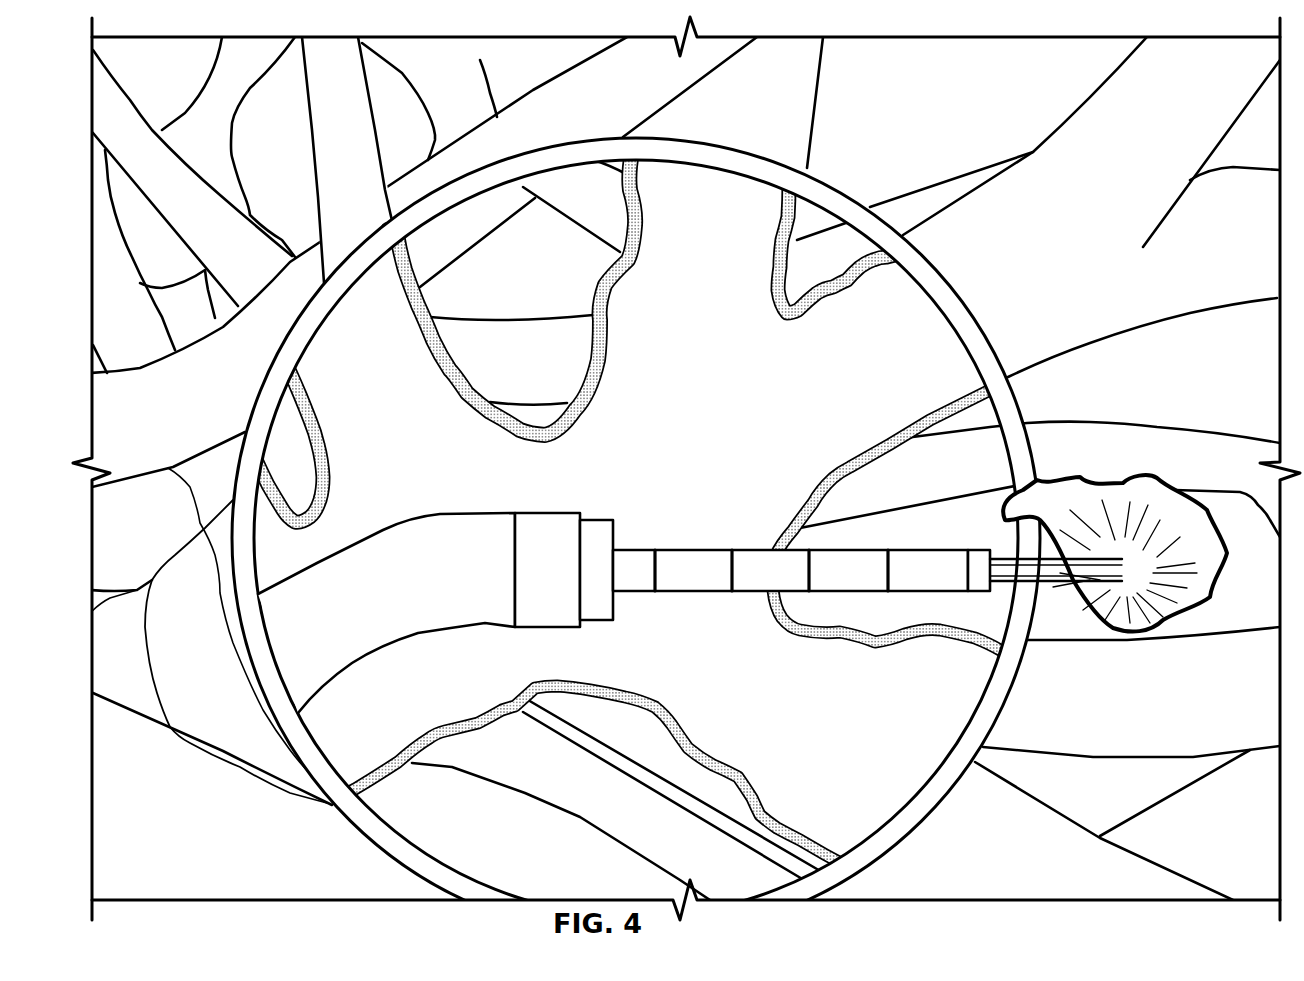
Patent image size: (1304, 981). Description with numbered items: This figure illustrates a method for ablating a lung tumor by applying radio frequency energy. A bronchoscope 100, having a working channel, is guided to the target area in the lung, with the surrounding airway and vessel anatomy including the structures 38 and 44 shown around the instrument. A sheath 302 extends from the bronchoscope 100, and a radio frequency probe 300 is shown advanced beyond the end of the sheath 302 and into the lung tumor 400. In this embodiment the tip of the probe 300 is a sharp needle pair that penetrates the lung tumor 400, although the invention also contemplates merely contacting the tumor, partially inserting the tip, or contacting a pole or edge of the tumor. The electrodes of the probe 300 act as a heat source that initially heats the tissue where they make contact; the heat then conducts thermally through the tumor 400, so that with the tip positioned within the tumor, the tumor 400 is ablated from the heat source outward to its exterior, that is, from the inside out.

The blood vessel 38 is at (428, 737).
The blood vessel 44 is at (770, 614).
The bronchoscope 100 is at (435, 512).
The radio frequency probe 300 is at (1047, 537).
The sheath 302 is at (688, 548).
The lung tumor 400 is at (1160, 500).